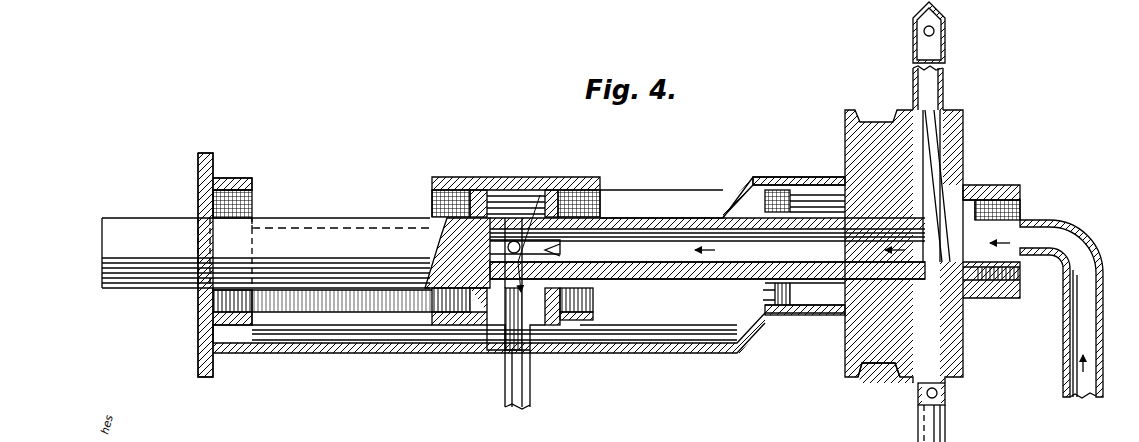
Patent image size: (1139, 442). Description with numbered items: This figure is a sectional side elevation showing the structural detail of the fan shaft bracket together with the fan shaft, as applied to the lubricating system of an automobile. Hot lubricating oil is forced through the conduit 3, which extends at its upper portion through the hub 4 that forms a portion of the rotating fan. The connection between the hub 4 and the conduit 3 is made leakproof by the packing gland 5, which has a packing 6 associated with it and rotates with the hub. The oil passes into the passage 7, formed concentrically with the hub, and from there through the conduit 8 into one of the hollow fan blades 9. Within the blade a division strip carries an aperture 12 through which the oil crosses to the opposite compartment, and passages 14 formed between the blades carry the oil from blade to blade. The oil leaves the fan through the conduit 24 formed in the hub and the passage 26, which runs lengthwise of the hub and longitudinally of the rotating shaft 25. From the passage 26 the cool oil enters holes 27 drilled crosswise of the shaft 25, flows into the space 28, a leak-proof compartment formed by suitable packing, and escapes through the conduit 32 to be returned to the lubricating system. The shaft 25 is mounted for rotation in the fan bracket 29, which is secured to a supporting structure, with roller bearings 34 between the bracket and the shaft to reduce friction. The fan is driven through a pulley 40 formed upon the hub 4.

The conduit 3 is at (1104, 343).
The hub 4 is at (963, 340).
The packing gland 5 is at (272, 395).
The packing 6 is at (405, 385).
The passage 7 is at (670, 375).
The conduit 8 is at (497, 150).
The fan blade 9 is at (778, 360).
The aperture 12 is at (923, 32).
The passage 14 is at (918, 396).
The conduit 24 is at (890, 122).
The rotating shaft 25 is at (340, 228).
The passage 26 is at (706, 240).
The holes 27 is at (512, 268).
The space 28 is at (545, 178).
The fan bracket 29 is at (705, 350).
The conduit 32 is at (531, 390).
The roller bearings 34 is at (803, 317).
The pulley 40 is at (866, 370).